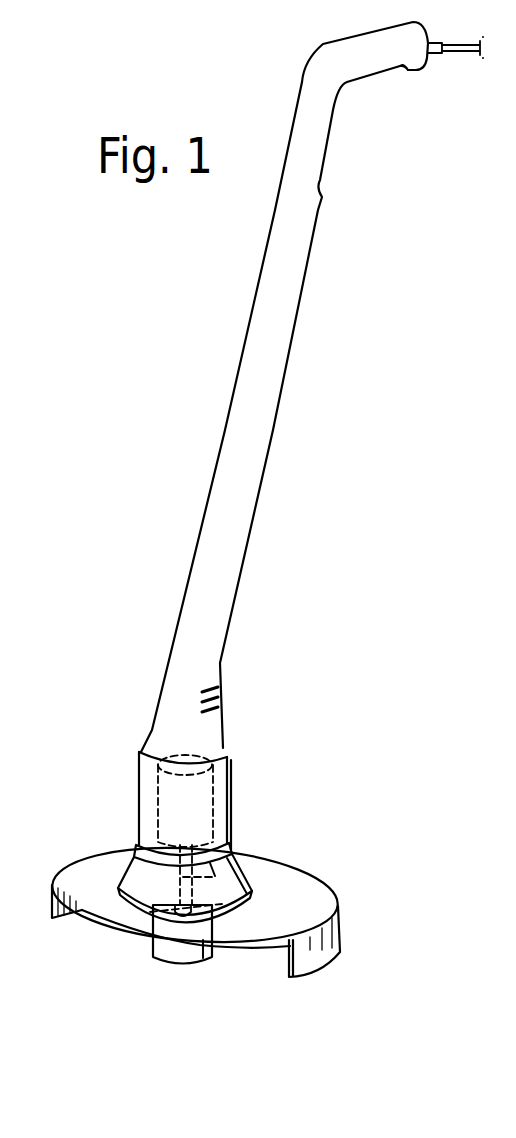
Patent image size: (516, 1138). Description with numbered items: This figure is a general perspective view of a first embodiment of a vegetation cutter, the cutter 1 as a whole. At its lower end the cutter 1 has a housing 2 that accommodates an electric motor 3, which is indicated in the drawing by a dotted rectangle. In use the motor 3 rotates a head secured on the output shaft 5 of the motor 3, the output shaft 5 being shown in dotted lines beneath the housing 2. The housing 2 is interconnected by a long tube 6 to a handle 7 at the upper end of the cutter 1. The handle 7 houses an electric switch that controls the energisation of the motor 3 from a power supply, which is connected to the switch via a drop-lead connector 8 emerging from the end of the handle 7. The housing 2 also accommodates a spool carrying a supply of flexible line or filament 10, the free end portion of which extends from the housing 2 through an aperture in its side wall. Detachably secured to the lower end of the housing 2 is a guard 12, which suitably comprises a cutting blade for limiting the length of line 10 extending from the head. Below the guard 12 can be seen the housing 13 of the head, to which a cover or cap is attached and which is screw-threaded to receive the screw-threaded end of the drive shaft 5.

The cutter 1 is at (201, 395).
The housing 2 is at (228, 788).
The electric motor 3 is at (160, 788).
The output shaft 5 is at (262, 853).
The tube 6 is at (245, 562).
The handle 7 is at (377, 68).
The drop-lead connector 8 is at (467, 50).
The flexible line or filament 10 is at (70, 967).
The guard 12 is at (325, 902).
The housing 13 is at (205, 958).